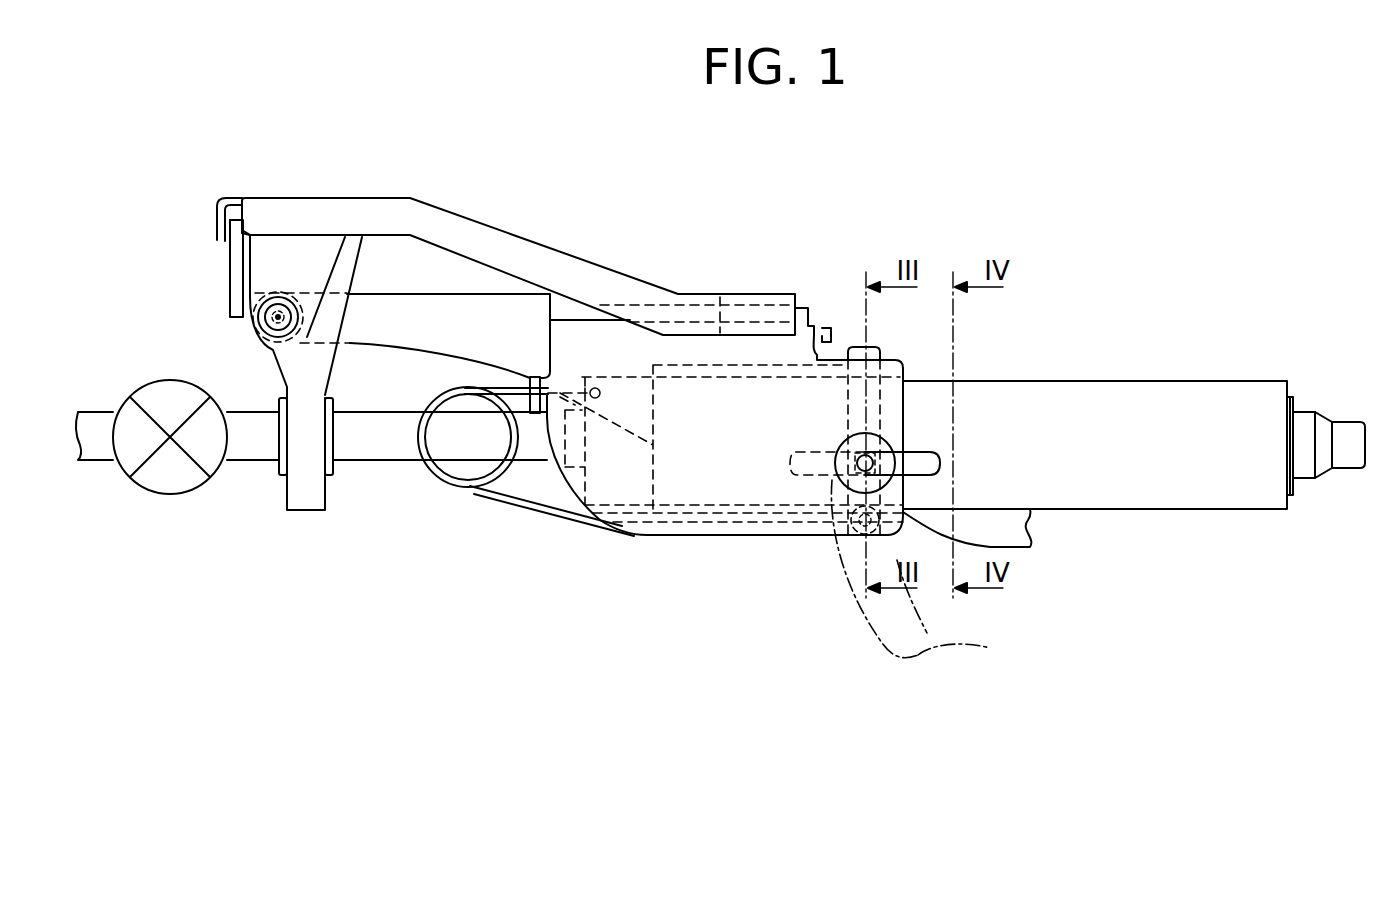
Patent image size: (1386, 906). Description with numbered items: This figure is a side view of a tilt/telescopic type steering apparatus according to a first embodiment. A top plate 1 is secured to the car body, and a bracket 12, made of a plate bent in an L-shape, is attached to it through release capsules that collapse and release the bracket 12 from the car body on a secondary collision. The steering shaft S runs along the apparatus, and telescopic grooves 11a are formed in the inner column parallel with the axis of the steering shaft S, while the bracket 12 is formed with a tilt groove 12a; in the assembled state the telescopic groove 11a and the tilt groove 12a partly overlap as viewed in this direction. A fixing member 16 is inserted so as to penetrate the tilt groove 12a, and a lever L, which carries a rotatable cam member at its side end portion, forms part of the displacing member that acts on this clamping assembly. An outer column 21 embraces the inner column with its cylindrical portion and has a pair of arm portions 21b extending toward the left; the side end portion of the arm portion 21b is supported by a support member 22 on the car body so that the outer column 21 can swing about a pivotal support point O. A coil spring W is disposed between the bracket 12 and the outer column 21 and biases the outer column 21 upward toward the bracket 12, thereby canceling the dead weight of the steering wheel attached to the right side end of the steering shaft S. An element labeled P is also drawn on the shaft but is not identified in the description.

The top plate 1 is at (590, 263).
The arm portions 21b is at (458, 300).
The outer column 21 is at (703, 489).
The support member 22 is at (308, 510).
The bracket 12 is at (848, 357).
The tilt groove 12a is at (868, 440).
The telescopic grooves 11a is at (933, 452).
The fixing member 16 is at (840, 456).
The pivotal support point O is at (274, 318).
The pulley P is at (177, 488).
The steering shaft S is at (381, 461).
The coil spring W is at (516, 487).
The lever L is at (1036, 539).